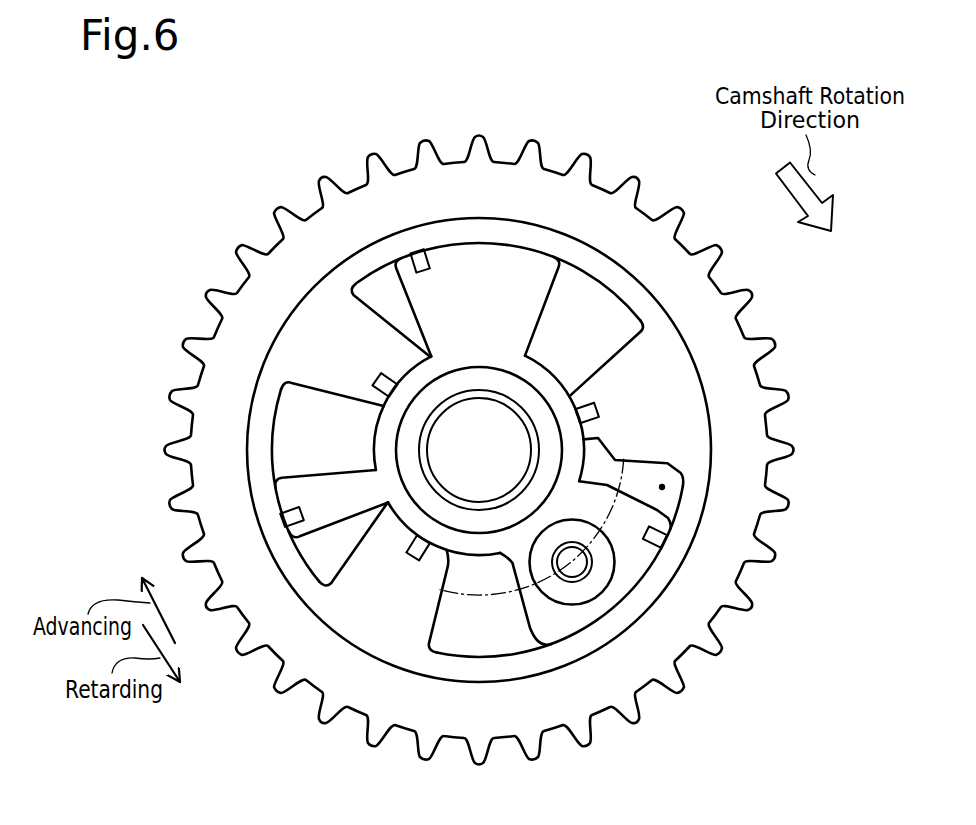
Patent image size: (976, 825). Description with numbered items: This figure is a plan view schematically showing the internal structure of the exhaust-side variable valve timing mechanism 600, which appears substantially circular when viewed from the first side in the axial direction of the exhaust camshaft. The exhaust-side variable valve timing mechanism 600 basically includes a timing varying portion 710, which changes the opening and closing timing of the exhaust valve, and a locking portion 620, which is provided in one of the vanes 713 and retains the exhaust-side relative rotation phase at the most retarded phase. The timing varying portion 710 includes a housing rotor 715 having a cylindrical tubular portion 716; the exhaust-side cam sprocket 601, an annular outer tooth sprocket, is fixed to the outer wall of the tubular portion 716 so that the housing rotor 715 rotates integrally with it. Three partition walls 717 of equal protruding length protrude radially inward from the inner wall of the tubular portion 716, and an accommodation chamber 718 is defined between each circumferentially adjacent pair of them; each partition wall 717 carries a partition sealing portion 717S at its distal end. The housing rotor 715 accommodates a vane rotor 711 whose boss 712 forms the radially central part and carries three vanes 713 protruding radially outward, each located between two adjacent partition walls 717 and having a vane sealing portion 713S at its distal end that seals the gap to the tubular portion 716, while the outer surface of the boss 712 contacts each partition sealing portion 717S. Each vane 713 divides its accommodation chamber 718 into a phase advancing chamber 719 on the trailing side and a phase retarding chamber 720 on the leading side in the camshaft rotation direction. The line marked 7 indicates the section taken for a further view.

The exhaust-side variable valve timing mechanism 600 is at (872, 398).
The exhaust-side cam sprocket 601 is at (548, 192).
The locking portion 620 is at (663, 487).
The timing varying portion 710 is at (727, 418).
The vane rotor 711 is at (313, 748).
The boss 712 is at (470, 545).
The vane 713 is at (461, 252).
The vane sealing portion 713S is at (414, 250).
The housing rotor 715 is at (303, 156).
The tubular portion 716 is at (370, 257).
The partition wall 717 is at (345, 338).
The partition sealing portion 717S is at (373, 379).
The accommodation chamber 718 is at (872, 583).
The phase advancing chamber 719 is at (408, 320).
The phase retarding chamber 720 is at (612, 337).
The section line VII-VII 7 is at (624, 459).